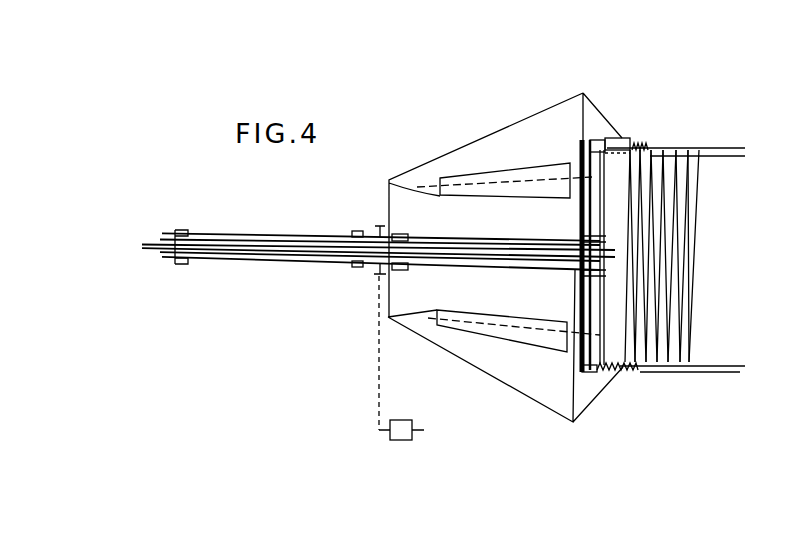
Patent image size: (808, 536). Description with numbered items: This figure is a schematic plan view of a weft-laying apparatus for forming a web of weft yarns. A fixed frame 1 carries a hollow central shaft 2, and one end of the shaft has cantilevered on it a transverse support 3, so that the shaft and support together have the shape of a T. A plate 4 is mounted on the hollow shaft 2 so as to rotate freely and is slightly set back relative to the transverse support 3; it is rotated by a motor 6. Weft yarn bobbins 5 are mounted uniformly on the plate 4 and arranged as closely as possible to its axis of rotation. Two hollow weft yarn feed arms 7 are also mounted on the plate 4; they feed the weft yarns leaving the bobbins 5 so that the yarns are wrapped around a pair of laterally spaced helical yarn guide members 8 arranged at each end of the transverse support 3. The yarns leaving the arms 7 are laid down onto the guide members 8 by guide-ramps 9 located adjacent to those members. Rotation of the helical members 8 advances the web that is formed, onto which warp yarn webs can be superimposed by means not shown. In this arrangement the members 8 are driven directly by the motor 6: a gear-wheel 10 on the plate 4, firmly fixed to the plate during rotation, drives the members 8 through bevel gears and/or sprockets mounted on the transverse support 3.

The fixed frame 1 is at (176, 232).
The hollow central shaft 2 is at (268, 235).
The transverse support 3 is at (592, 372).
The plate 4 is at (575, 373).
The weft yarn bobbins 5 is at (520, 178).
The motor 6 is at (407, 360).
The hollow weft yarn feed arms 7 is at (612, 140).
The helical yarn guide members 8 is at (647, 148).
The guide-ramps 9 is at (623, 138).
The gear-wheel 10 is at (505, 205).